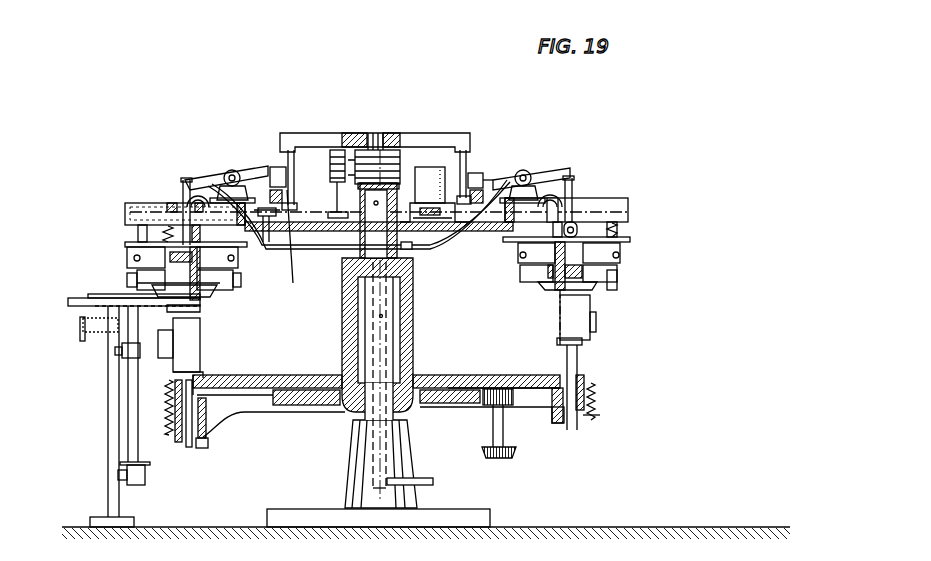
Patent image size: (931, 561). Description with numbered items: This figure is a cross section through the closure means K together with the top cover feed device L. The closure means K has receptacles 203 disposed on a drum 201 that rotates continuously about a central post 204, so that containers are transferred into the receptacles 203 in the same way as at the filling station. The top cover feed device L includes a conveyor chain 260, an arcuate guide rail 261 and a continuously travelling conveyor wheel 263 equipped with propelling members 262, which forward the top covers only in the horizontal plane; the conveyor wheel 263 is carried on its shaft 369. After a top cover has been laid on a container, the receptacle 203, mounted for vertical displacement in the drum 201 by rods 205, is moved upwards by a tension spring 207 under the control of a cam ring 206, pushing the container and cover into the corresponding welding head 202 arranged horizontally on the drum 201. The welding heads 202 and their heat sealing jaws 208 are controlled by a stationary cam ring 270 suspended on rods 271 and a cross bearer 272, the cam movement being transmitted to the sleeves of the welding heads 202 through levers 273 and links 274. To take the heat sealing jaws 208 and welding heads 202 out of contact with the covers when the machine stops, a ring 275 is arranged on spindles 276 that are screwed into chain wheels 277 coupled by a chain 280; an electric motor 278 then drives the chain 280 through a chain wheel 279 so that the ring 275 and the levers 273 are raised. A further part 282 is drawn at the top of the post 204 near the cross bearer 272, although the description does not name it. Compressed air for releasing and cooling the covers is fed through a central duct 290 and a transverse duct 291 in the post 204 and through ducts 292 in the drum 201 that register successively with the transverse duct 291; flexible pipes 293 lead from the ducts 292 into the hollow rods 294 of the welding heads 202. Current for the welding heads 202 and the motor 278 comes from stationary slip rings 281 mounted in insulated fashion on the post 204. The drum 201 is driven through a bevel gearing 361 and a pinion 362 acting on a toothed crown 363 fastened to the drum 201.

The closure means K is at (158, 133).
The top cover feed device L is at (80, 390).
The drum 201 is at (298, 373).
The welding heads 202 is at (115, 242).
The receptacles 203 is at (192, 350).
The post 204 is at (390, 350).
The rods 205 is at (190, 447).
The cam ring 206 is at (233, 417).
The tension spring 207 is at (170, 425).
The heat sealing jaws 208 is at (135, 278).
The conveyor chain 260 is at (82, 340).
The arcuate guide rail 261 is at (197, 309).
The propelling members 262 is at (90, 298).
The conveyor wheel 263 is at (92, 294).
The cam ring 270 is at (272, 168).
The rods 271 is at (291, 133).
The cross bearer 272 is at (323, 133).
The levers 273 is at (207, 180).
The links 274 is at (183, 190).
The ring 275 is at (273, 192).
The spindles 276 is at (278, 245).
The chain wheels 277 is at (292, 246).
The electric motor 278 is at (483, 177).
The chain wheel 279 is at (430, 212).
The chain 280 is at (304, 198).
The slip rings 281 is at (437, 178).
The threaded shaft 282 is at (355, 148).
The central duct 290 is at (383, 318).
The transverse duct 291 is at (412, 277).
The ducts 292 is at (350, 273).
The flexible pipes 293 is at (300, 249).
The hollow rods 294 is at (575, 268).
The bevel gearing 361 is at (513, 457).
The pinion 362 is at (517, 397).
The toothed crown 363 is at (287, 412).
The shaft 369 is at (133, 438).